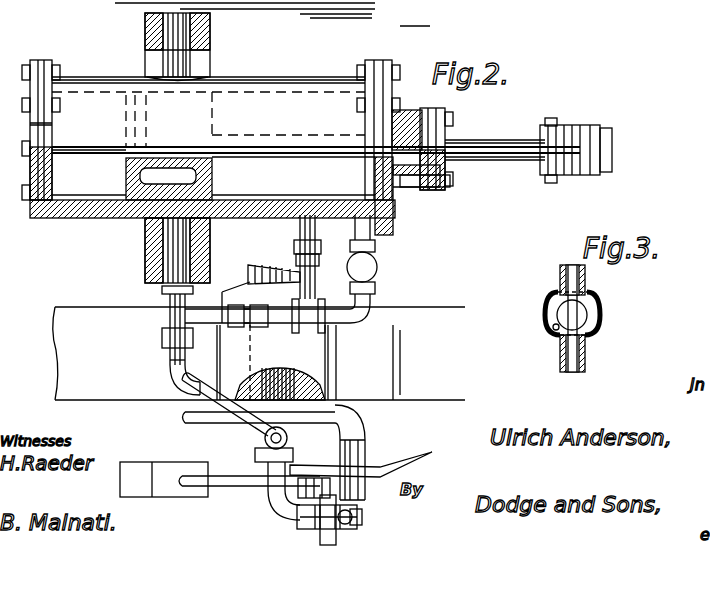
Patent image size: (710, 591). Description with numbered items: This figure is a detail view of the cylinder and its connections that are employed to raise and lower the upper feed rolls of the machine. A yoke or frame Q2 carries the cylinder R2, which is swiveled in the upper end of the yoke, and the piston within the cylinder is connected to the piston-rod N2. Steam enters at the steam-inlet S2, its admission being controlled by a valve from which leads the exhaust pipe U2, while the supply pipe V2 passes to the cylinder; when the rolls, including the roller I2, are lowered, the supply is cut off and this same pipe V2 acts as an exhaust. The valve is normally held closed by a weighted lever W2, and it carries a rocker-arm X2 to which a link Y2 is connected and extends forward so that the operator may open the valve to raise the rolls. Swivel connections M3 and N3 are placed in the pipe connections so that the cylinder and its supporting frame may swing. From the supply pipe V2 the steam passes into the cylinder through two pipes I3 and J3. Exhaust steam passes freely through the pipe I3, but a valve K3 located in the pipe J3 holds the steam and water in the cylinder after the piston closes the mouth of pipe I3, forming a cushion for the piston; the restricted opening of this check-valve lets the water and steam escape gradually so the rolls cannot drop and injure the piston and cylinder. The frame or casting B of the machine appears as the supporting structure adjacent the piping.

In FIG. 2, the yoke or frame Q2 is at (212, 50).
In FIG. 2, the cylinder R2 is at (291, 147).
In FIG. 2, the piston-rod N2 is at (505, 152).
In FIG. 2, the swivel connection M3 is at (170, 315).
In FIG. 2, the pipe I3 is at (300, 236).
In FIG. 2, the valve K3 is at (376, 264).
In FIG. 3, the valve K3 is at (590, 312).
In FIG. 2, the pipe J3 is at (372, 296).
In FIG. 3, the pipe J3 is at (590, 362).
In FIG. 2, the frame or casting B is at (405, 386).
In FIG. 2, the supply pipe V2 is at (185, 413).
In FIG. 2, the swivel connection N3 is at (262, 440).
In FIG. 2, the rocker-arm X2 is at (300, 472).
In FIG. 2, the exhaust pipe U2 is at (357, 456).
In FIG. 2, the link Y2 is at (380, 462).
In FIG. 2, the weighted lever W2 is at (225, 480).
In FIG. 2, the roller I2 is at (303, 533).
In FIG. 2, the steam-inlet S2 is at (358, 520).